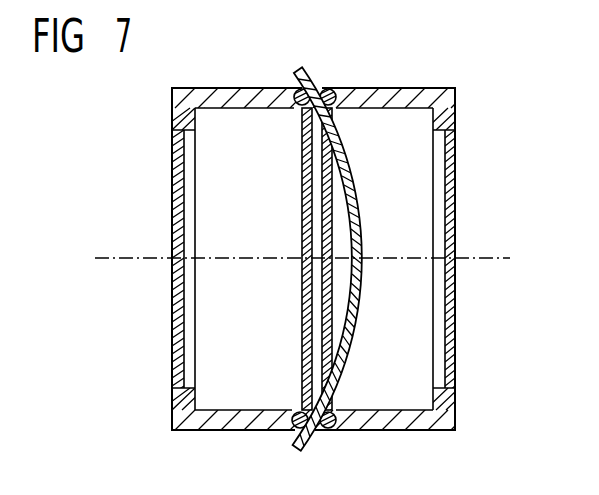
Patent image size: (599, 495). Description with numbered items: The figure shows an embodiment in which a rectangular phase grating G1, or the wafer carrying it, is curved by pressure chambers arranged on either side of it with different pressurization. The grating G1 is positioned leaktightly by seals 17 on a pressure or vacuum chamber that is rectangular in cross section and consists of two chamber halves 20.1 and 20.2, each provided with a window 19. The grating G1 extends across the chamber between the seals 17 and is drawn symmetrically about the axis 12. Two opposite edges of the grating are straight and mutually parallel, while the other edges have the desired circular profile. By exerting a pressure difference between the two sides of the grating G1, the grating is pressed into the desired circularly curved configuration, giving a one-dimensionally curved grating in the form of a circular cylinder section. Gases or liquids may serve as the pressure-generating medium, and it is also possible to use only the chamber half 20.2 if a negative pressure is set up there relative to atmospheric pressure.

The axis 12 is at (120, 262).
The seal 17 is at (294, 90).
The window 19 is at (174, 190).
The chamber half 20.1 is at (226, 432).
The chamber half 20.2 is at (396, 432).
The phase grating G1 is at (348, 156).